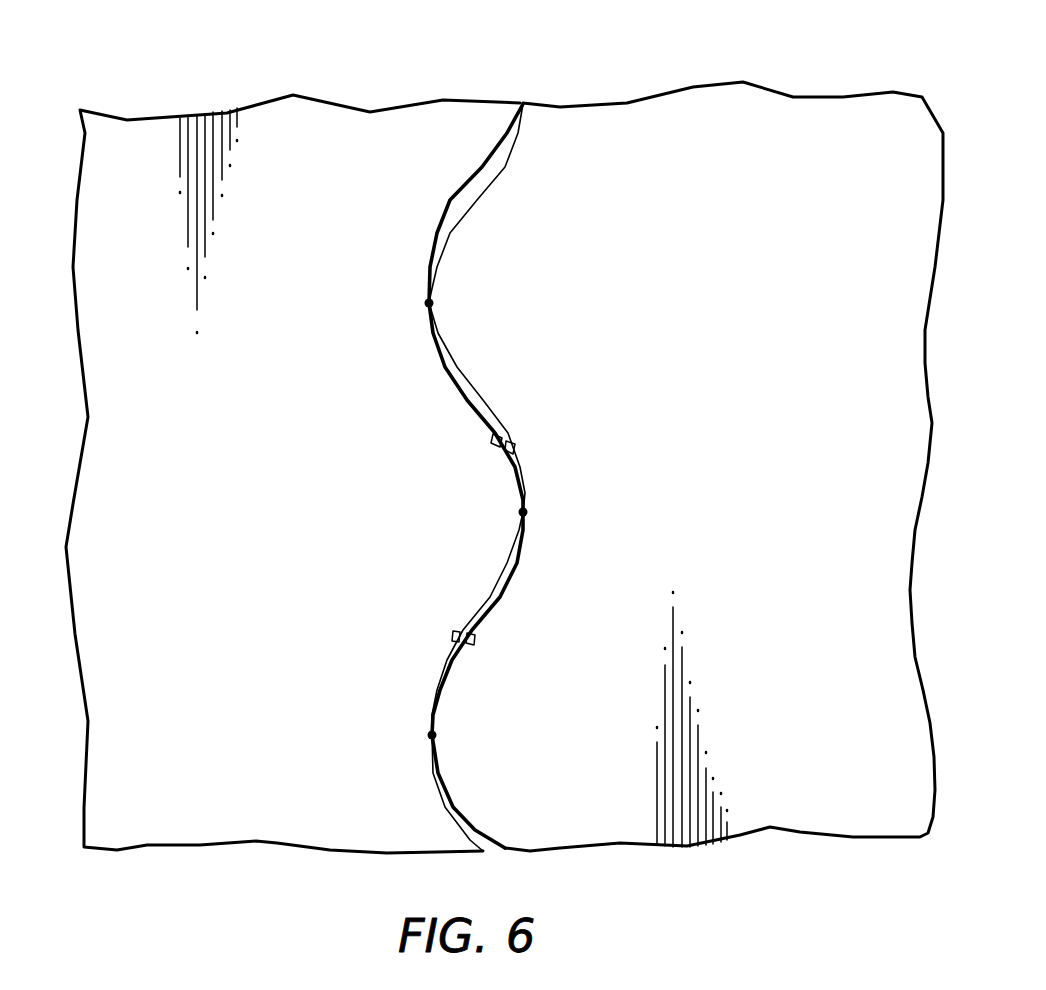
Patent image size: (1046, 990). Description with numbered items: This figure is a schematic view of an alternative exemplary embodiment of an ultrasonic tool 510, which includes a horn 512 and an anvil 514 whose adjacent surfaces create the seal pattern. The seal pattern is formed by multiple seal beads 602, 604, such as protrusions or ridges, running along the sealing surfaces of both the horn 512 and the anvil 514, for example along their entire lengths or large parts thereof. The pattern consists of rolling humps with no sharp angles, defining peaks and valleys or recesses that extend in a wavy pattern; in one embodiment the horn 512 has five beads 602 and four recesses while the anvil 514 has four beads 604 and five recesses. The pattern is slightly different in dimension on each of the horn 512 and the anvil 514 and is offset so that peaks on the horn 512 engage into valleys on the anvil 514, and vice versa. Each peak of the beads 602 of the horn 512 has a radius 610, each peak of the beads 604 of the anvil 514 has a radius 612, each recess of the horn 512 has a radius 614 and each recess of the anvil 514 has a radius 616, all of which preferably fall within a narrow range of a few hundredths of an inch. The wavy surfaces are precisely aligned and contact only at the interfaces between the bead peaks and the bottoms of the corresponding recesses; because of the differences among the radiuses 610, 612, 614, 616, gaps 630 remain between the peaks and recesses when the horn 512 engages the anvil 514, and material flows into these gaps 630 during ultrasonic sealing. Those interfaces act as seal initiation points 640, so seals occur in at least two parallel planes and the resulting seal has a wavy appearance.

The ultrasonic tool 510 is at (383, 96).
The horn 512 is at (304, 552).
The anvil 514 is at (716, 483).
The seal beads of the horn 602 is at (470, 544).
The seal beads of the anvil 604 is at (526, 320).
The radius of horn bead peaks 610 is at (497, 447).
The radius of anvil bead peaks 612 is at (470, 641).
The radius of horn recesses 614 is at (453, 637).
The radius of anvil recesses 616 is at (513, 446).
The gaps 630 is at (480, 410).
The seal initiation points 640 is at (429, 303).